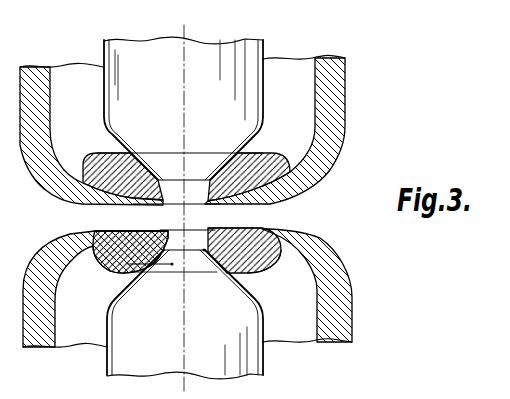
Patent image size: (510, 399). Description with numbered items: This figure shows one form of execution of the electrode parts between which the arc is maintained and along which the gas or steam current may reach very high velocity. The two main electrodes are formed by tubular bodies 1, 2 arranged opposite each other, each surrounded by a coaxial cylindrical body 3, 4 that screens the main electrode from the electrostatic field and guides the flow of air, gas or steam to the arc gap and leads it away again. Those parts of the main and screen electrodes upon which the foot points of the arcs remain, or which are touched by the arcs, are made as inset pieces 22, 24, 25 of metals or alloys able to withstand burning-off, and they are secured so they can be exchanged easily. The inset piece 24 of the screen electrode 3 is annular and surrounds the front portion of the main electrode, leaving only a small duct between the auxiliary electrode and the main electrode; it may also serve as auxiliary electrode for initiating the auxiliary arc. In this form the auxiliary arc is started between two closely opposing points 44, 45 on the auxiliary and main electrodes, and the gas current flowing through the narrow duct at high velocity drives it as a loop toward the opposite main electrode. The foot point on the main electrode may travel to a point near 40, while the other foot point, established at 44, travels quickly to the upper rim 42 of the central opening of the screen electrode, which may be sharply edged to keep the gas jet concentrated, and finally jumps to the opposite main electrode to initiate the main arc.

The tubular body 1 is at (248, 360).
The tubular body 2 is at (229, 65).
The cylindrical body 3 is at (337, 310).
The cylindrical body 4 is at (328, 88).
The inset piece 22 is at (147, 272).
The inset piece 24 is at (137, 250).
The inset piece 25 is at (272, 169).
The point 40 is at (257, 230).
The upper rim 42 is at (211, 228).
The point 44 is at (245, 263).
The point 45 is at (226, 273).